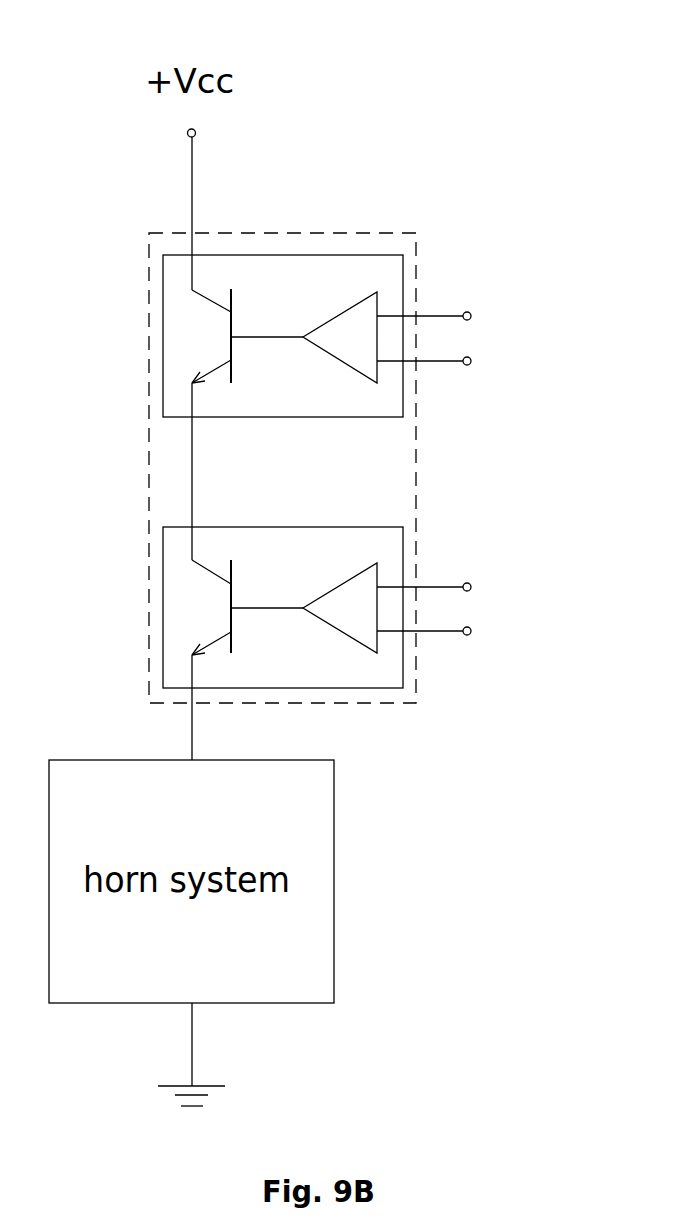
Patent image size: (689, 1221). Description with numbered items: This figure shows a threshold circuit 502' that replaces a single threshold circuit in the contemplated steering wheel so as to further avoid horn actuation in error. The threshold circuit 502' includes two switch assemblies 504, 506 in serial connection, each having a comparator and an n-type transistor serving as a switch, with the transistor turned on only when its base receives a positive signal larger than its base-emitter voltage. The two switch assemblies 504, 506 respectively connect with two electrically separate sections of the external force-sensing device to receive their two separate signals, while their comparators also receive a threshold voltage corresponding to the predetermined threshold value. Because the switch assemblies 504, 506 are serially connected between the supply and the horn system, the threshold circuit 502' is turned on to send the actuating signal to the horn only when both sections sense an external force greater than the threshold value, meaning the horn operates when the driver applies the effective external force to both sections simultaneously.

The threshold circuit 502' is at (354, 399).
The switch assembly 504 is at (348, 255).
The switch assembly 506 is at (340, 527).